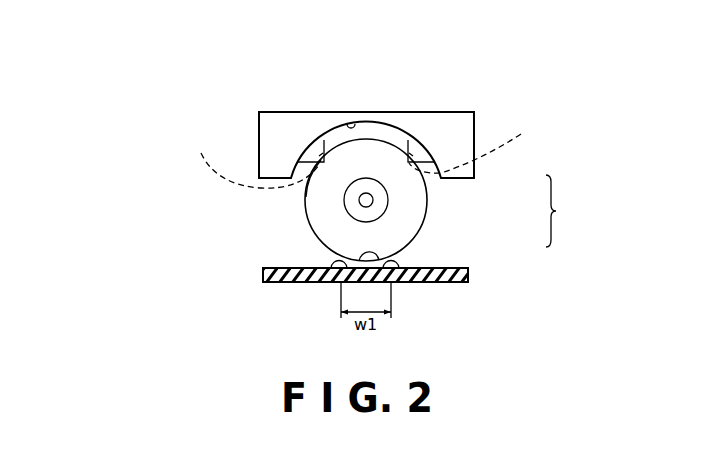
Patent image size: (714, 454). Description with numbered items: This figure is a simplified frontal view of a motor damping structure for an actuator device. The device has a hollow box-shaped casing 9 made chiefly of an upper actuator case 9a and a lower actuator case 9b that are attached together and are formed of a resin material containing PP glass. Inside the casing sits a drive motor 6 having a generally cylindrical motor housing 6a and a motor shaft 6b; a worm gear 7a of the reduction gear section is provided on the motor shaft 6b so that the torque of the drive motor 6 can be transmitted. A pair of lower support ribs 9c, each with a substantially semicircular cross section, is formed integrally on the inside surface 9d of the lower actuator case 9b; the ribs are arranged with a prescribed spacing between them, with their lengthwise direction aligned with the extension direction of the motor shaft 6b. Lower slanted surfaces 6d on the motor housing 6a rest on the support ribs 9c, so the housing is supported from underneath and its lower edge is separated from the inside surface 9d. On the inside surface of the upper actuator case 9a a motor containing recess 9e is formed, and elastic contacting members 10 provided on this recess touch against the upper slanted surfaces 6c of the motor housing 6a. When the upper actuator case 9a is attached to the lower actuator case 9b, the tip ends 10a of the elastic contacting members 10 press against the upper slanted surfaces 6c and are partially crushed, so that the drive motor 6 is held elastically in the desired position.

The drive motor 6 is at (308, 228).
The motor housing 6a is at (305, 197).
The motor shaft 6b is at (366, 193).
The upper slanted surfaces 6c is at (318, 155).
The lower slanted surfaces 6d is at (330, 262).
The worm gear 7a is at (369, 193).
The casing 9 is at (557, 211).
The upper actuator case 9a is at (473, 172).
The lower actuator case 9b is at (467, 270).
The lower support ribs 9c is at (334, 268).
The inside surface 9d is at (392, 270).
The motor containing recess 9e is at (347, 123).
The elastic contacting members 10 is at (325, 142).
The tip ends 10a is at (369, 154).